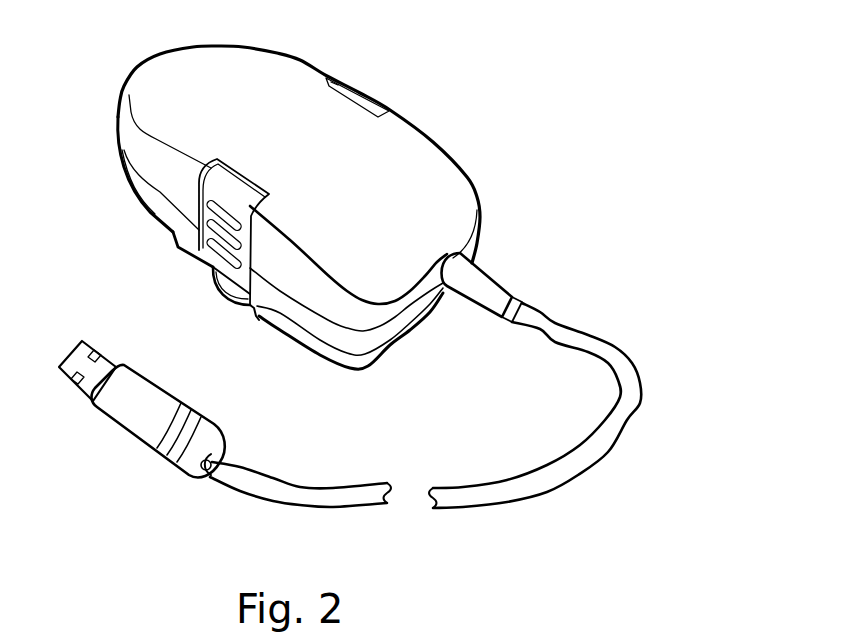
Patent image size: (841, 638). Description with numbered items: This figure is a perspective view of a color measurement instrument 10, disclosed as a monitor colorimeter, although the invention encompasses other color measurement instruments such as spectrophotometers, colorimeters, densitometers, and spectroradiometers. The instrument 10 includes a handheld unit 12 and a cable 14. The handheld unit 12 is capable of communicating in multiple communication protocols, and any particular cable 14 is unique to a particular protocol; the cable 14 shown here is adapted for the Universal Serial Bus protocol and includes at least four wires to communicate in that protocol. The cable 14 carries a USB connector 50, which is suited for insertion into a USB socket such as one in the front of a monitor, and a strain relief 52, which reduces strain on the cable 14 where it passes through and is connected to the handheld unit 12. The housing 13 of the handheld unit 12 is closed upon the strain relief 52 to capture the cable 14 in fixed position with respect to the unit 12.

The color measurement instrument 10 is at (547, 213).
The handheld unit 12 is at (318, 58).
The housing 13 is at (370, 187).
The cable 14 is at (554, 494).
The USB connector 50 is at (130, 428).
The strain relief 52 is at (478, 300).